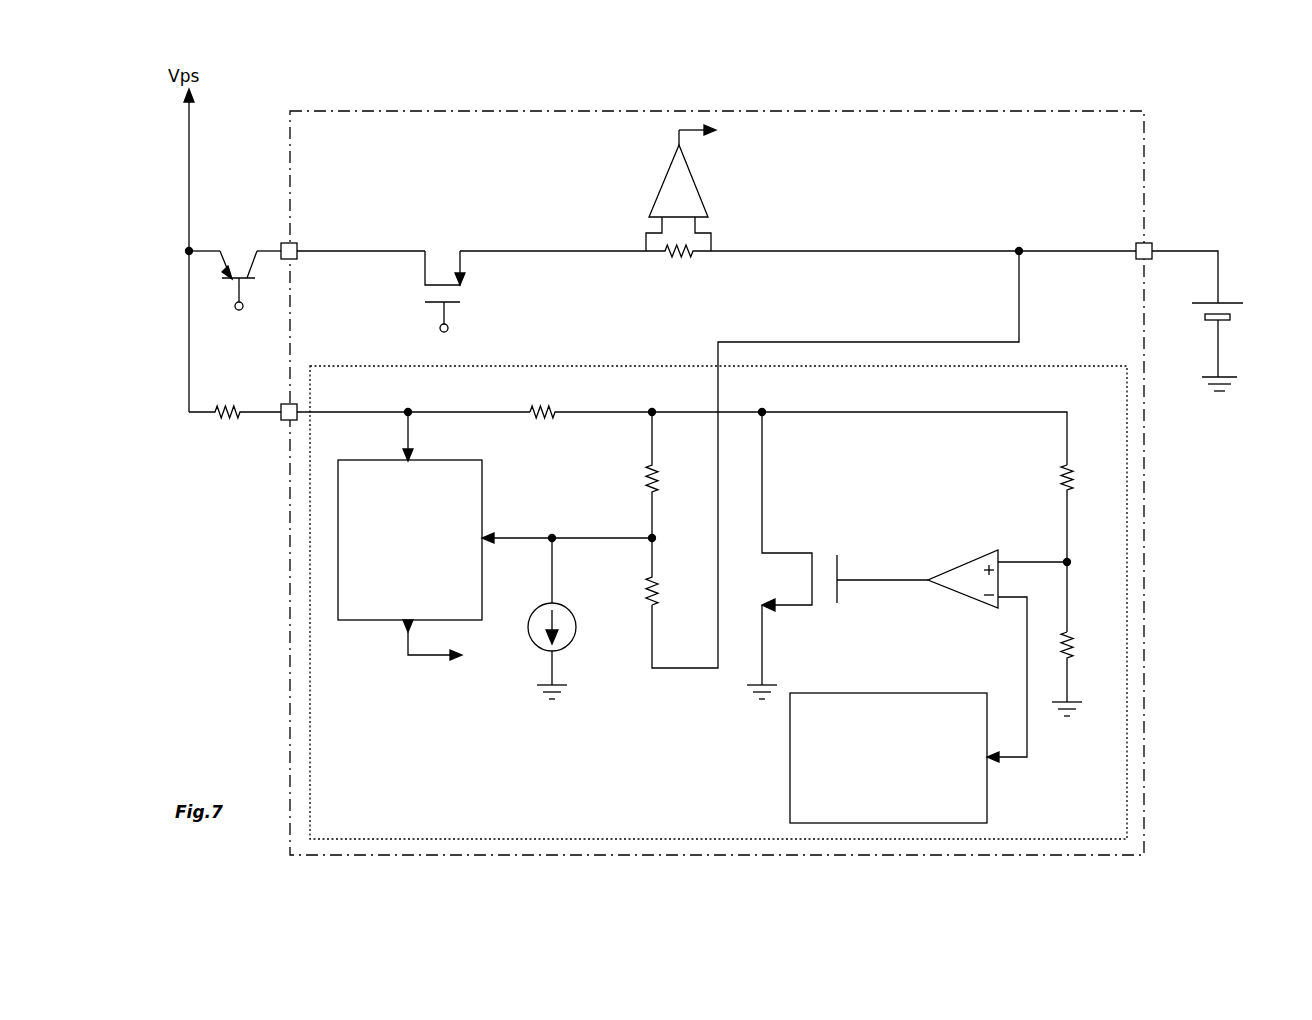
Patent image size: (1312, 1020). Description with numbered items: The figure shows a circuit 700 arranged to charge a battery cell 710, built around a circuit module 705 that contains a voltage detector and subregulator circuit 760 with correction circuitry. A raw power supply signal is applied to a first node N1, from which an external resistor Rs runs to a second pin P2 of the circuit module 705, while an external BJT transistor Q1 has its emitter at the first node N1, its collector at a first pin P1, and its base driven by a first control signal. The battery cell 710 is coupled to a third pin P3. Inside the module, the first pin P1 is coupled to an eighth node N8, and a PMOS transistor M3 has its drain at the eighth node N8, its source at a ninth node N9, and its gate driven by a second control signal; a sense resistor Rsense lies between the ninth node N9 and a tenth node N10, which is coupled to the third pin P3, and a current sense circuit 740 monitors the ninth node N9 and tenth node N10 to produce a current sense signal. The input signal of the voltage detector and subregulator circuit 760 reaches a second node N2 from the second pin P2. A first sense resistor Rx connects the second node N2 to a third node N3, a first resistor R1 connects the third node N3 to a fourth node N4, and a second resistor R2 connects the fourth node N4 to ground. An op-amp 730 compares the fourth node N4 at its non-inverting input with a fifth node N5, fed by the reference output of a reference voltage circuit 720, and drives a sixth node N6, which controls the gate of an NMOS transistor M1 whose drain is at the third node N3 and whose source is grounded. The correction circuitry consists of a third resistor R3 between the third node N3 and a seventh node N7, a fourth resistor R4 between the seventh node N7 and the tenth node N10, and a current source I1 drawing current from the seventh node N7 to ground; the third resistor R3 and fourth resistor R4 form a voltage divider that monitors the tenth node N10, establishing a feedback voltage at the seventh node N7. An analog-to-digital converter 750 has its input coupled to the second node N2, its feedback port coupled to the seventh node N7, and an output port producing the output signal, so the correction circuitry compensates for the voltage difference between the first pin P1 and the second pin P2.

The circuit 700 is at (1190, 112).
The circuit module 705 is at (673, 100).
The battery cell 710 is at (1238, 297).
The reference voltage circuit 720 is at (880, 680).
The op-amp 730 is at (977, 547).
The current sense circuit 740 is at (653, 187).
The analog-to-digital converter 750 is at (382, 632).
The voltage detector and subregulator circuit 760 is at (643, 362).
The BJT transistor Q1 is at (228, 250).
The PMOS transistor M3 is at (458, 247).
The NMOS transistor M1 is at (843, 547).
The sense resistor Rsense is at (683, 260).
The external resistor Rs is at (223, 425).
The first sense resistor Rx is at (545, 400).
The first resistor R1 is at (1070, 463).
The second resistor R2 is at (1070, 628).
The third resistor R3 is at (658, 463).
The fourth resistor R4 is at (658, 578).
The current source I1 is at (545, 600).
The first pin P1 is at (300, 278).
The second pin P2 is at (285, 392).
The third pin P3 is at (1150, 232).
The first node N1 is at (172, 254).
The second node N2 is at (407, 444).
The third node N3 is at (880, 422).
The fourth node N4 is at (1077, 560).
The fifth node N5 is at (1020, 657).
The sixth node N6 is at (874, 592).
The seventh node N7 is at (649, 513).
The eighth node N8 is at (393, 263).
The ninth node N9 is at (574, 258).
The tenth node N10 is at (884, 258).